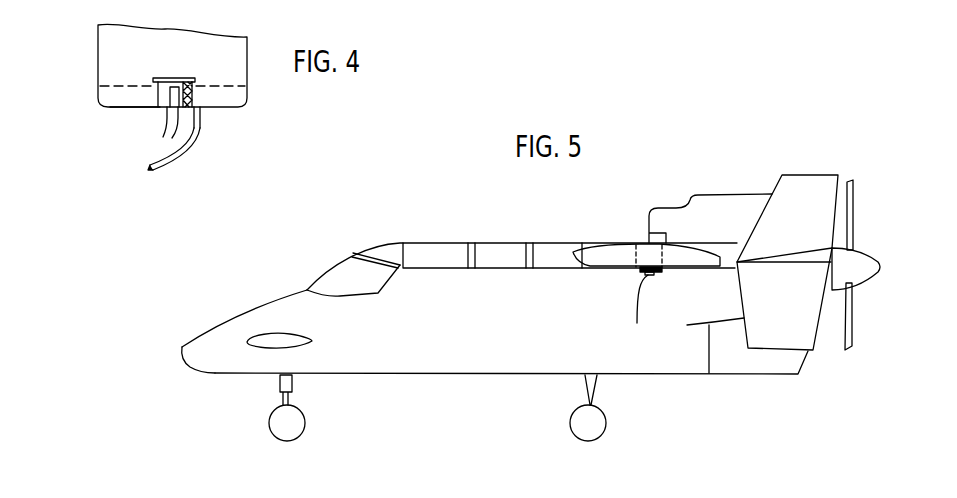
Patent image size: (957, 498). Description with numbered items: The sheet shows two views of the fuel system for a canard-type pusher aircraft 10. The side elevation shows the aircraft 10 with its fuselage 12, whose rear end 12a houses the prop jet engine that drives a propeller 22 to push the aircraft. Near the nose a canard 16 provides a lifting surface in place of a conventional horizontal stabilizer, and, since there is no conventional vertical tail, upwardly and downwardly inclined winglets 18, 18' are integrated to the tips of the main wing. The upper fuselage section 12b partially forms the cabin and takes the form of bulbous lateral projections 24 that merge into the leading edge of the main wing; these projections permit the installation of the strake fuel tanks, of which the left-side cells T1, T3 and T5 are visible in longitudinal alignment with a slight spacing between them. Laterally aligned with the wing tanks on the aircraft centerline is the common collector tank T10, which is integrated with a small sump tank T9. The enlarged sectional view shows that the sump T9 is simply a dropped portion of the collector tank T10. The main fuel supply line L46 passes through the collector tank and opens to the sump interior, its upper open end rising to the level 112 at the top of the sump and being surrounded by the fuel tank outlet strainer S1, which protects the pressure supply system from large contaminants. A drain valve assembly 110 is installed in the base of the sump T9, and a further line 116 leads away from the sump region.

In FIG. 4, the common collector tank T10 is at (105, 57).
In FIG. 5, the common collector tank T10 is at (636, 272).
In FIG. 4, the level of the top of the sump tank 112 is at (147, 62).
In FIG. 4, the fuel tank outlet strainer S1 is at (178, 80).
In FIG. 4, the sump tank T9 is at (107, 107).
In FIG. 5, the sump tank T9 is at (657, 275).
In FIG. 4, the main fuel supply line L46 is at (167, 123).
In FIG. 4, the drain valve assembly 110 is at (202, 117).
In FIG. 4, the fuel feed tube 116 is at (170, 162).
In FIG. 5, the aircraft 10 is at (217, 308).
In FIG. 5, the fuselage 12 is at (368, 362).
In FIG. 5, the rear end of the fuselage 12a is at (832, 292).
In FIG. 5, the upper fuselage section 12b is at (398, 300).
In FIG. 5, the canards 16 is at (267, 335).
In FIG. 5, the bulbous lateral projections 24 is at (392, 243).
In FIG. 5, the strake fuel tank T1 is at (443, 252).
In FIG. 5, the strake fuel tank T3 is at (500, 252).
In FIG. 5, the strake fuel tank T5 is at (552, 252).
In FIG. 5, the upwardly inclined winglet 18 is at (787, 218).
In FIG. 5, the downwardly inclined winglet 18' is at (784, 299).
In FIG. 5, the propeller 22 is at (854, 210).